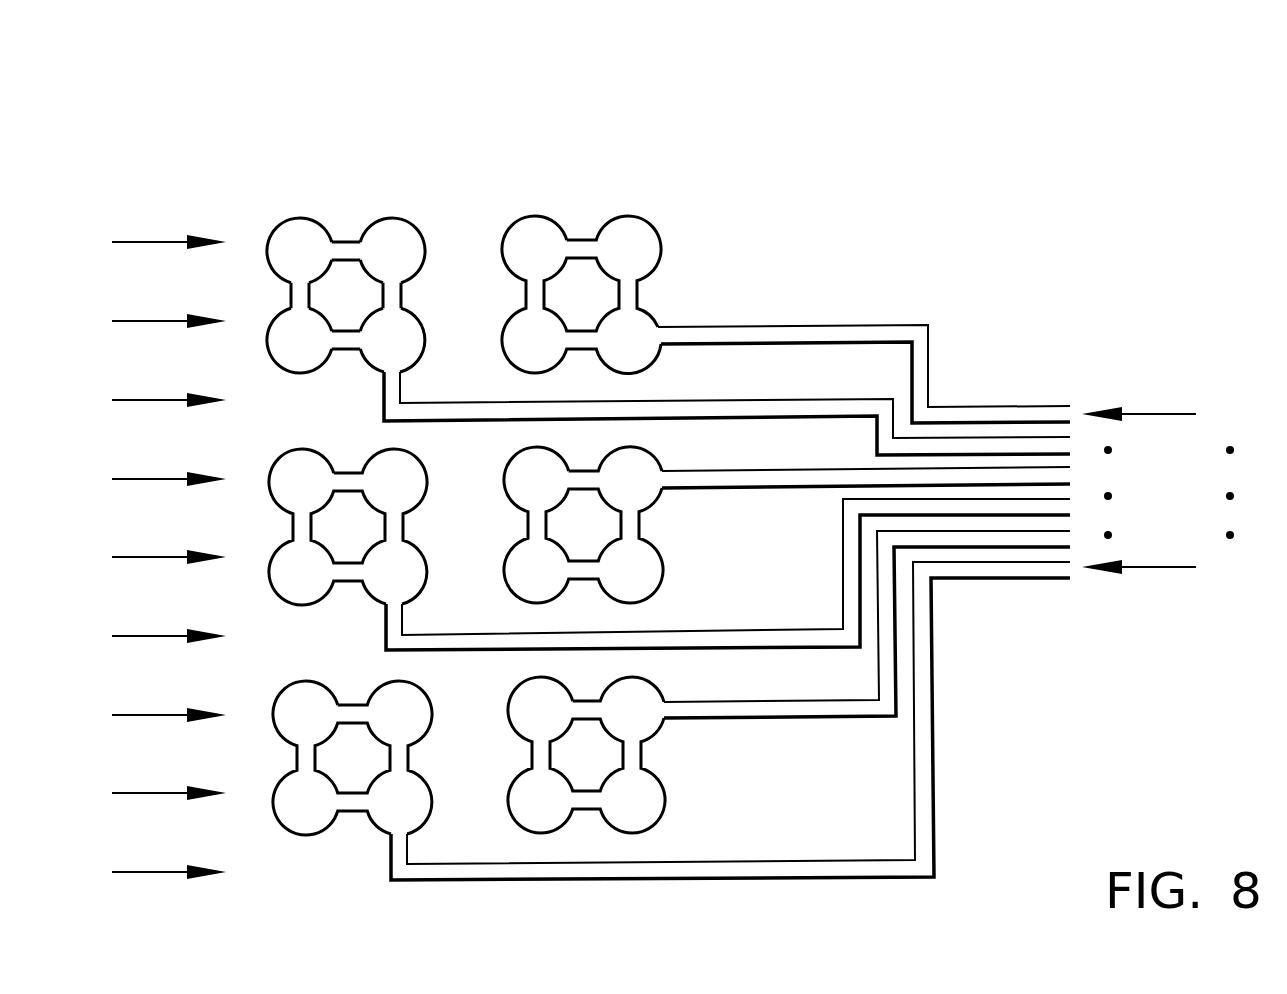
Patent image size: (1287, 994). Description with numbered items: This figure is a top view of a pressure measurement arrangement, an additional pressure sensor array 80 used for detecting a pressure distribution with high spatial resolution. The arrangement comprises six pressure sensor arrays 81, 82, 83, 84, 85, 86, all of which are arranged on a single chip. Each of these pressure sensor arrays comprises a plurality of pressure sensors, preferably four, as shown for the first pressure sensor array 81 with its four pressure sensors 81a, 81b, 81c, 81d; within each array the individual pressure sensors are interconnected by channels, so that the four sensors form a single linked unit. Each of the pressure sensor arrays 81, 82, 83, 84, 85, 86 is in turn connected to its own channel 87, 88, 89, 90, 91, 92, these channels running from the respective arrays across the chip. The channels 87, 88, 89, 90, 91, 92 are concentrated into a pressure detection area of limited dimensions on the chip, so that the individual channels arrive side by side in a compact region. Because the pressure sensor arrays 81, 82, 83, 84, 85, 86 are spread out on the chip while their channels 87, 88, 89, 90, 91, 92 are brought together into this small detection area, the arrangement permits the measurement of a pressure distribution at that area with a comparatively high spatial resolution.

The pressure sensor array 80 is at (491, 138).
The pressure sensor array 81 is at (374, 291).
The pressure sensor 81a is at (300, 240).
The pressure sensor 81b is at (402, 243).
The pressure sensor 81c is at (285, 355).
The pressure sensor 81d is at (403, 340).
The pressure sensor array 82 is at (553, 223).
The pressure sensor array 83 is at (322, 603).
The pressure sensor array 84 is at (670, 563).
The pressure sensor array 85 is at (313, 834).
The pressure sensor array 86 is at (667, 800).
The channel 87 is at (935, 412).
The channel 88 is at (972, 447).
The channel 89 is at (1022, 477).
The channel 90 is at (1039, 505).
The channel 91 is at (1002, 540).
The channel 92 is at (960, 568).